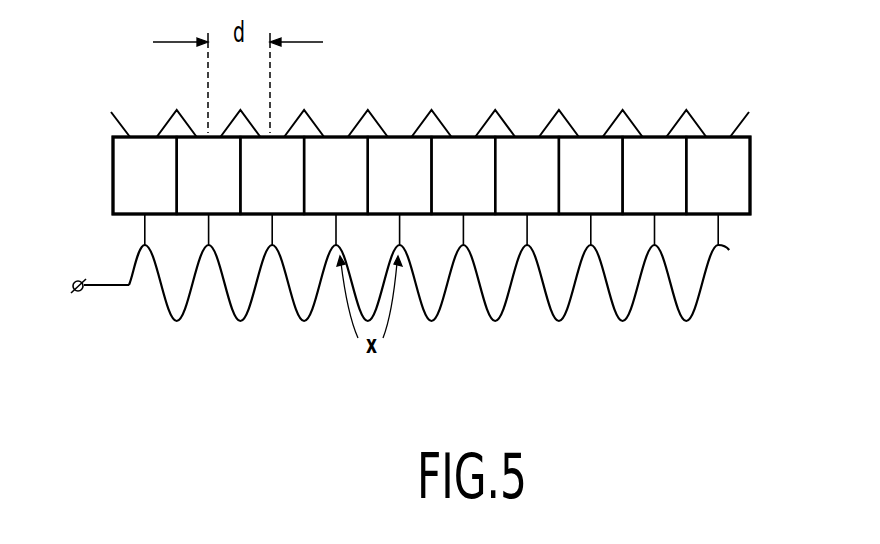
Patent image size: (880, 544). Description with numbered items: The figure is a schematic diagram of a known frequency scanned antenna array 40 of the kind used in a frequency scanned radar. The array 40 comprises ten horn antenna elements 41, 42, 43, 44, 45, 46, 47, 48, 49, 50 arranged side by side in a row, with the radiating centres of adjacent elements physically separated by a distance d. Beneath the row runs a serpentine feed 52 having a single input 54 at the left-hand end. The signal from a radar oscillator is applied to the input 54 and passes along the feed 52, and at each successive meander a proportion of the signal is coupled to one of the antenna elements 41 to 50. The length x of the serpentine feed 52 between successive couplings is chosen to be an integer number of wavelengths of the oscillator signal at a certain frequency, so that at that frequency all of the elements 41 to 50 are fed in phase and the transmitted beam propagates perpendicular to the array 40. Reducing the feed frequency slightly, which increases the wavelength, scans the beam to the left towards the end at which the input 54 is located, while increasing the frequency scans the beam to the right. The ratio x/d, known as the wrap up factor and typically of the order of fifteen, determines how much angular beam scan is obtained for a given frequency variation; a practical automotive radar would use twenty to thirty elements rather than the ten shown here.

The antenna array 40 is at (752, 175).
The horn antenna element 41 is at (157, 190).
The horn antenna element 42 is at (221, 190).
The horn antenna element 43 is at (284, 190).
The horn antenna element 44 is at (348, 190).
The horn antenna element 45 is at (412, 190).
The horn antenna element 46 is at (475, 190).
The horn antenna element 47 is at (539, 190).
The horn antenna element 48 is at (603, 190).
The horn antenna element 49 is at (666, 190).
The horn antenna element 50 is at (730, 190).
The serpentine feed 52 is at (250, 322).
The input 54 is at (83, 297).